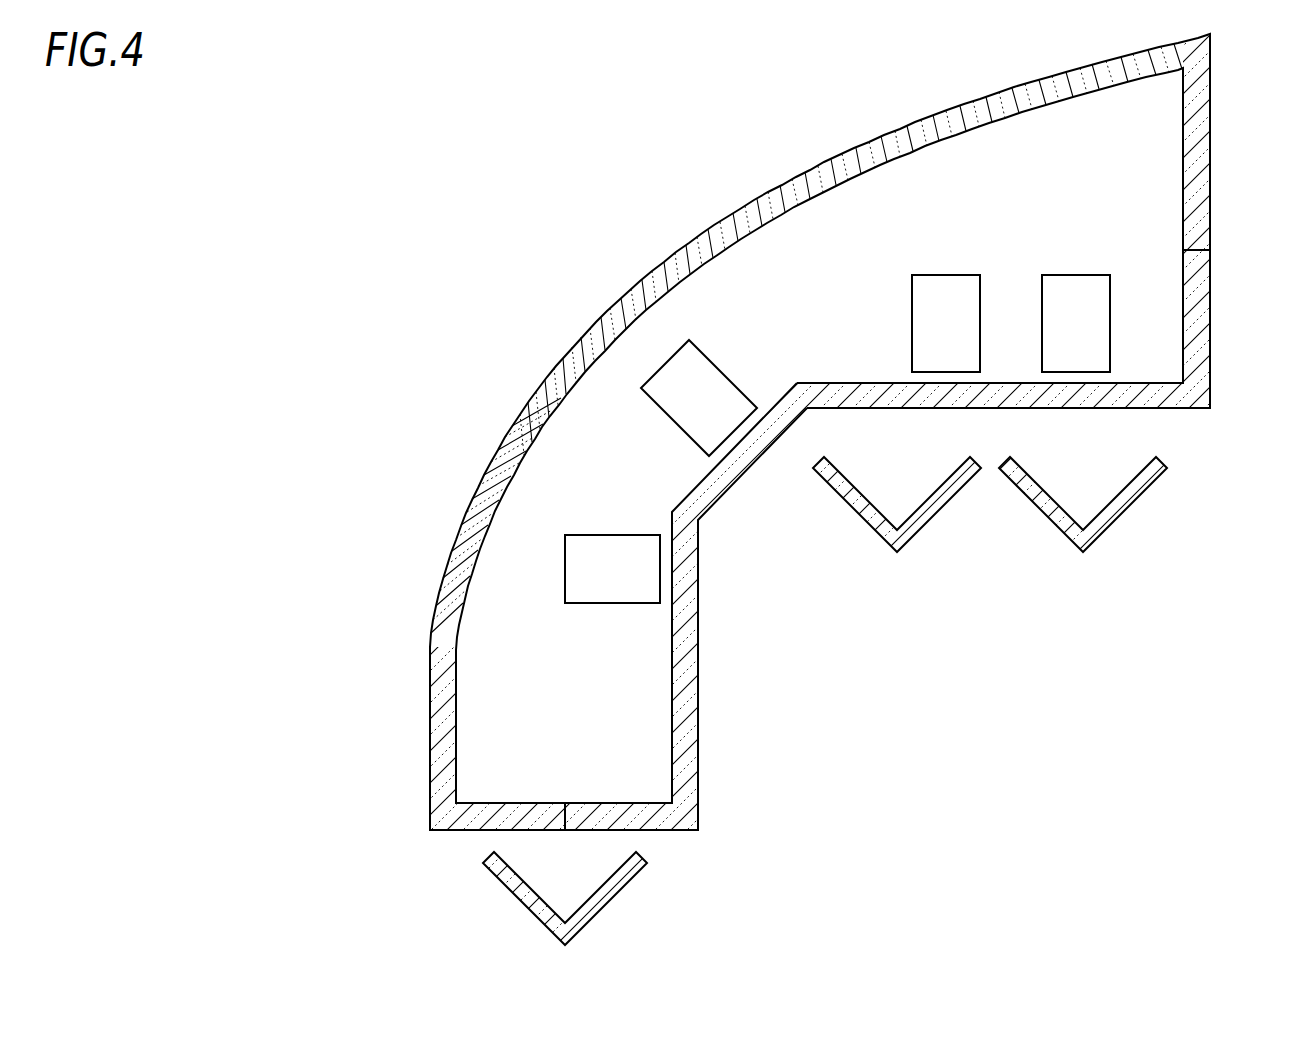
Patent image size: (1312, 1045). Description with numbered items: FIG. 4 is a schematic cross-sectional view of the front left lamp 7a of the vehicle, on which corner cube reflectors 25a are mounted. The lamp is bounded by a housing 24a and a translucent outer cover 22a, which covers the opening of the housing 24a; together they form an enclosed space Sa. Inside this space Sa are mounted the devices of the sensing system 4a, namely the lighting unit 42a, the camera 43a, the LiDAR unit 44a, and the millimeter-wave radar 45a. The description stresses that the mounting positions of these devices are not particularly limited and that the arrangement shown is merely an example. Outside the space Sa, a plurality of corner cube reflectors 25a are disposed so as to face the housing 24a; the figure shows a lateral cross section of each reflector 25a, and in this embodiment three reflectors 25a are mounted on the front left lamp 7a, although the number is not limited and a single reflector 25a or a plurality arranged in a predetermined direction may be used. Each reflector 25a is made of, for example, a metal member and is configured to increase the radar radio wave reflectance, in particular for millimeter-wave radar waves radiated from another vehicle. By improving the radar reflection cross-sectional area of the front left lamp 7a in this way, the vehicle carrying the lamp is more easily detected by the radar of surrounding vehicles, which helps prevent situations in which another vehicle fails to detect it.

The front left lamp 7a is at (490, 183).
The sensing system 4a is at (600, 415).
The outer cover 22a is at (975, 100).
The housing 24a is at (1198, 328).
The corner cube reflector 25a is at (937, 512).
The lighting unit 42a is at (944, 290).
The camera 43a is at (712, 385).
The LiDAR unit 44a is at (612, 553).
The millimeter-wave radar 45a is at (1074, 290).
The space Sa is at (555, 700).